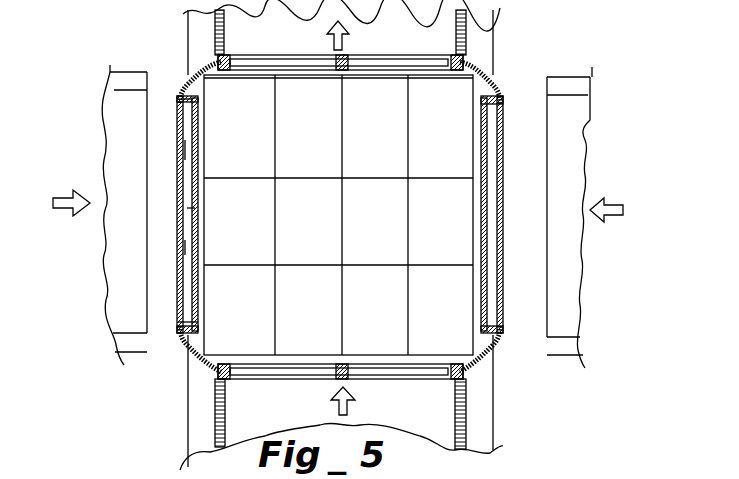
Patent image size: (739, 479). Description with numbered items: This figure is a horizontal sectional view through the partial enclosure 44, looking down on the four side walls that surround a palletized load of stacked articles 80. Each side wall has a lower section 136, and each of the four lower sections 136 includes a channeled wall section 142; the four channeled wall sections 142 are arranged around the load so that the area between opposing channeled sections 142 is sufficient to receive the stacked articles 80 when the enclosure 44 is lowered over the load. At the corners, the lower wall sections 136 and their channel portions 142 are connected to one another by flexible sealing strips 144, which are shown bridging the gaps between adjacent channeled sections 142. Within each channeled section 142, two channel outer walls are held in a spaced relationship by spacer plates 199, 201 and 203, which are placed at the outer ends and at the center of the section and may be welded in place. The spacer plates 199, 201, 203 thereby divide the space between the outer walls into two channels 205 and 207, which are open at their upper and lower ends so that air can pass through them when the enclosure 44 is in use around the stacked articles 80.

The partial enclosure 44 is at (540, 51).
The stacked articles 80 is at (433, 162).
The lower section 136 is at (293, 55).
The channeled wall section 142 is at (244, 53).
The flexible sealing strip 144 is at (183, 82).
The spacer plate 199 is at (192, 100).
The spacer plate 201 is at (188, 214).
The spacer plate 203 is at (185, 332).
The channel 205 is at (188, 247).
The channel 207 is at (190, 148).